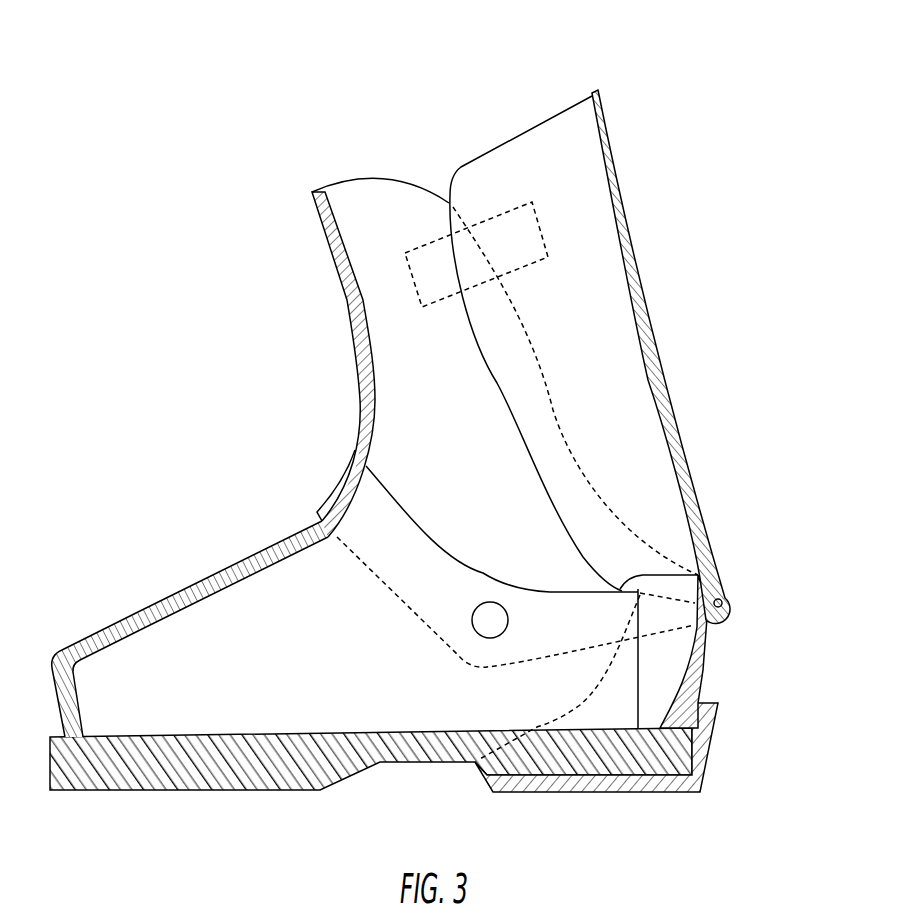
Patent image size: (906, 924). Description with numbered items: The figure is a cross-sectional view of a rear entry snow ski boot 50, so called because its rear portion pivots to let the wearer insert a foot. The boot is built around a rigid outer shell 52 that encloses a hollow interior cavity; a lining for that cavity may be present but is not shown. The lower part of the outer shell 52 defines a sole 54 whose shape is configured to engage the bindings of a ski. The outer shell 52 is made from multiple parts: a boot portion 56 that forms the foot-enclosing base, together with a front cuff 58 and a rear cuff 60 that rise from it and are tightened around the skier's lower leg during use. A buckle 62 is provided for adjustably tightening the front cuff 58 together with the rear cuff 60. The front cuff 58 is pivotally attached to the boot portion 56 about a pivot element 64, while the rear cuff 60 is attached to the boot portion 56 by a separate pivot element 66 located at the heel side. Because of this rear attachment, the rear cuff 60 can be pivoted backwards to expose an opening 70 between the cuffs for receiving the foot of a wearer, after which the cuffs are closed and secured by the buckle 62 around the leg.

The ski boot 50 is at (218, 428).
The outer shell 52 is at (128, 610).
The sole 54 is at (110, 768).
The boot portion 56 is at (242, 553).
The front cuff 58 is at (338, 283).
The rear cuff 60 is at (663, 357).
The buckle 62 is at (508, 215).
The pivot element 64 is at (487, 630).
The pivot element 66 is at (727, 603).
The opening 70 is at (425, 130).